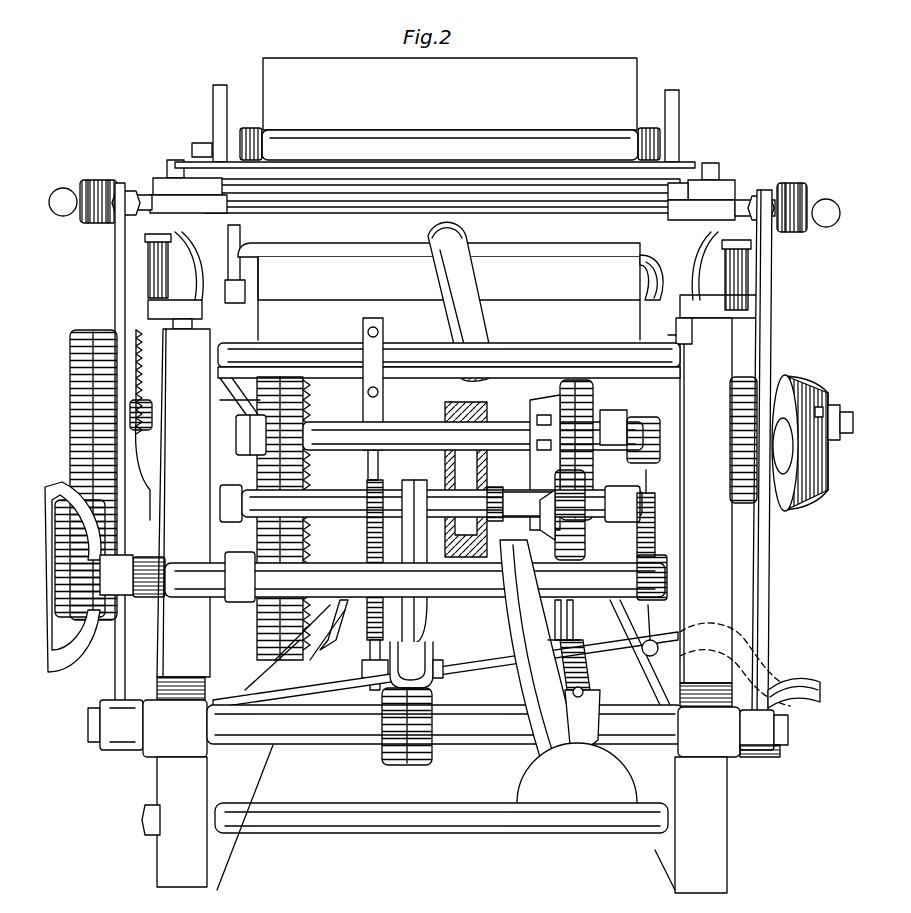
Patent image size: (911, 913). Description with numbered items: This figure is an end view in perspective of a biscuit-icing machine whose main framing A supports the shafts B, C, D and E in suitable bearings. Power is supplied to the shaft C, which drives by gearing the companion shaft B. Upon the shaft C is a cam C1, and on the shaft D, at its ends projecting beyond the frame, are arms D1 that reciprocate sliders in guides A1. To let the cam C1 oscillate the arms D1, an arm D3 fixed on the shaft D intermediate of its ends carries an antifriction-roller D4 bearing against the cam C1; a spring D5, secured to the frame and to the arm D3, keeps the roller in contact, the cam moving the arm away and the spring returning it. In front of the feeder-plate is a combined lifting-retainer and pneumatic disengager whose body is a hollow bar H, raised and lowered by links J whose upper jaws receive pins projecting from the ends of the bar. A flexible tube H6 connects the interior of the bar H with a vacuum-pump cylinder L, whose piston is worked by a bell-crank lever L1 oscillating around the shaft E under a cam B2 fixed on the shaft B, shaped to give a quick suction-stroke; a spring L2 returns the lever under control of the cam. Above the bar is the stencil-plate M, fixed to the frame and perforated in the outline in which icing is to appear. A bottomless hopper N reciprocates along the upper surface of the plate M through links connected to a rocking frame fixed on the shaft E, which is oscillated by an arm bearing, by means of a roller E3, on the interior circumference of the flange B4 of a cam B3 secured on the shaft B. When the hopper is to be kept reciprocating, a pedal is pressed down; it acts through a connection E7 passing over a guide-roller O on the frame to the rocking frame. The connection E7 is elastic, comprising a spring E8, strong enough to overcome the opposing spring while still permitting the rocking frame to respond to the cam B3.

The bottomless hopper N is at (450, 94).
The stencil-plate M is at (396, 166).
The main framing A is at (176, 186).
The guides A1 is at (716, 192).
The hollow bar H is at (462, 302).
The flexible tube H6 is at (542, 669).
The guide-roller O is at (637, 284).
The links J is at (160, 268).
The arms D1 is at (788, 567).
The connection E7 is at (684, 345).
The shaft B is at (246, 430).
The cam B3 is at (458, 388).
The cam B2 is at (575, 425).
The shaft E is at (246, 500).
The roller E3 is at (492, 498).
The spring D5 is at (372, 552).
The flange B4 is at (480, 545).
The shaft C is at (240, 566).
The spring E8 is at (652, 555).
The cam C1 is at (338, 624).
The shaft D is at (258, 705).
The antifriction-roller D4 is at (443, 678).
The arm D3 is at (408, 756).
The bell-crank lever L1 is at (562, 608).
The spring L2 is at (595, 682).
The vacuum-pump cylinder L is at (441, 788).